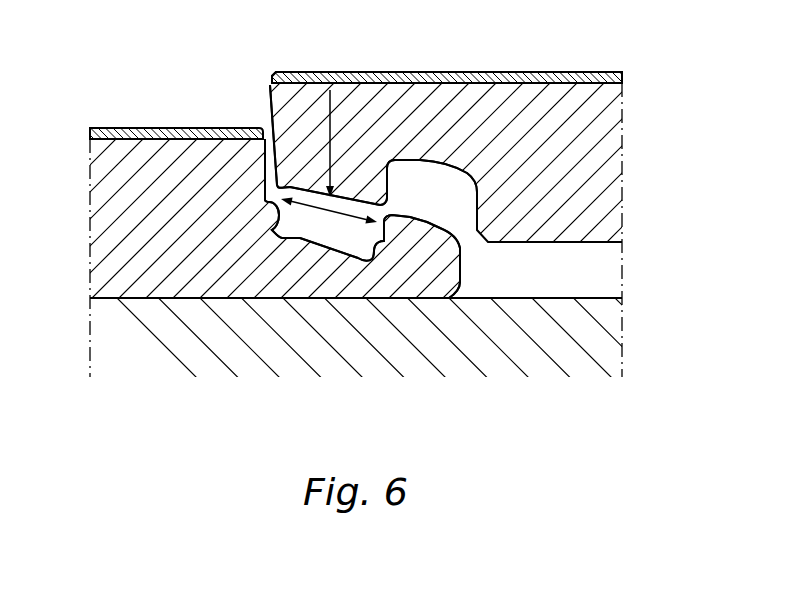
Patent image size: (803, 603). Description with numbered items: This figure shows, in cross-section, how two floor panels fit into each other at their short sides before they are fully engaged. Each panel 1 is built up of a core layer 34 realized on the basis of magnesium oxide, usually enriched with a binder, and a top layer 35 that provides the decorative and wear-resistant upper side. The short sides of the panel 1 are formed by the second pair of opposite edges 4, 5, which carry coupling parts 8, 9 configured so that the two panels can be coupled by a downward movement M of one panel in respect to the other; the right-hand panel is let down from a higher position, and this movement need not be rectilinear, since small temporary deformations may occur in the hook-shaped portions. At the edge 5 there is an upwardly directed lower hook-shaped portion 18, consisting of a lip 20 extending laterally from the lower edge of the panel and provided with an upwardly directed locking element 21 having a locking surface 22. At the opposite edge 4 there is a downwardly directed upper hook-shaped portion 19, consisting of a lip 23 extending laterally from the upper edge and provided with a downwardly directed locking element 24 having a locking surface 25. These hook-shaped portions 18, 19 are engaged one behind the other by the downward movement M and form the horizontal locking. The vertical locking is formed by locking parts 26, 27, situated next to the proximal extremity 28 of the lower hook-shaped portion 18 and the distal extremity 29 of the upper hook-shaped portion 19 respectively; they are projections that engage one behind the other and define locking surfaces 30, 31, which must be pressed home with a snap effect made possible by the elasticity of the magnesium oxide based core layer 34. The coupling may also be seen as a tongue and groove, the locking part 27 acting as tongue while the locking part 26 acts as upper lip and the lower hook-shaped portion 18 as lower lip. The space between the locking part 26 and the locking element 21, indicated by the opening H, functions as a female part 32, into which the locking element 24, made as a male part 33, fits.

The panel 1 is at (106, 118).
The edge 4 is at (284, 62).
The edge 5 is at (238, 113).
The coupling part 8 is at (393, 148).
The coupling part 9 is at (189, 172).
The lower hook-shaped portion 18 is at (302, 314).
The upper hook-shaped portion 19 is at (466, 130).
The lip 20 is at (325, 272).
The locking element 21 is at (440, 262).
The locking surface 22 is at (366, 262).
The lip 23 is at (463, 120).
The locking element 24 is at (293, 170).
The locking surface 25 is at (390, 180).
The locking part 26 is at (264, 197).
The locking part 27 is at (292, 163).
The proximal extremity 28 is at (262, 251).
The distal extremity 29 is at (255, 90).
The locking surface 30 is at (272, 230).
The locking surface 31 is at (277, 183).
The female part 32 is at (348, 240).
The male part 33 is at (268, 190).
The core layer 34 is at (598, 156).
The top layer 35 is at (622, 78).
The downward movement M is at (333, 130).
The opening H is at (329, 221).